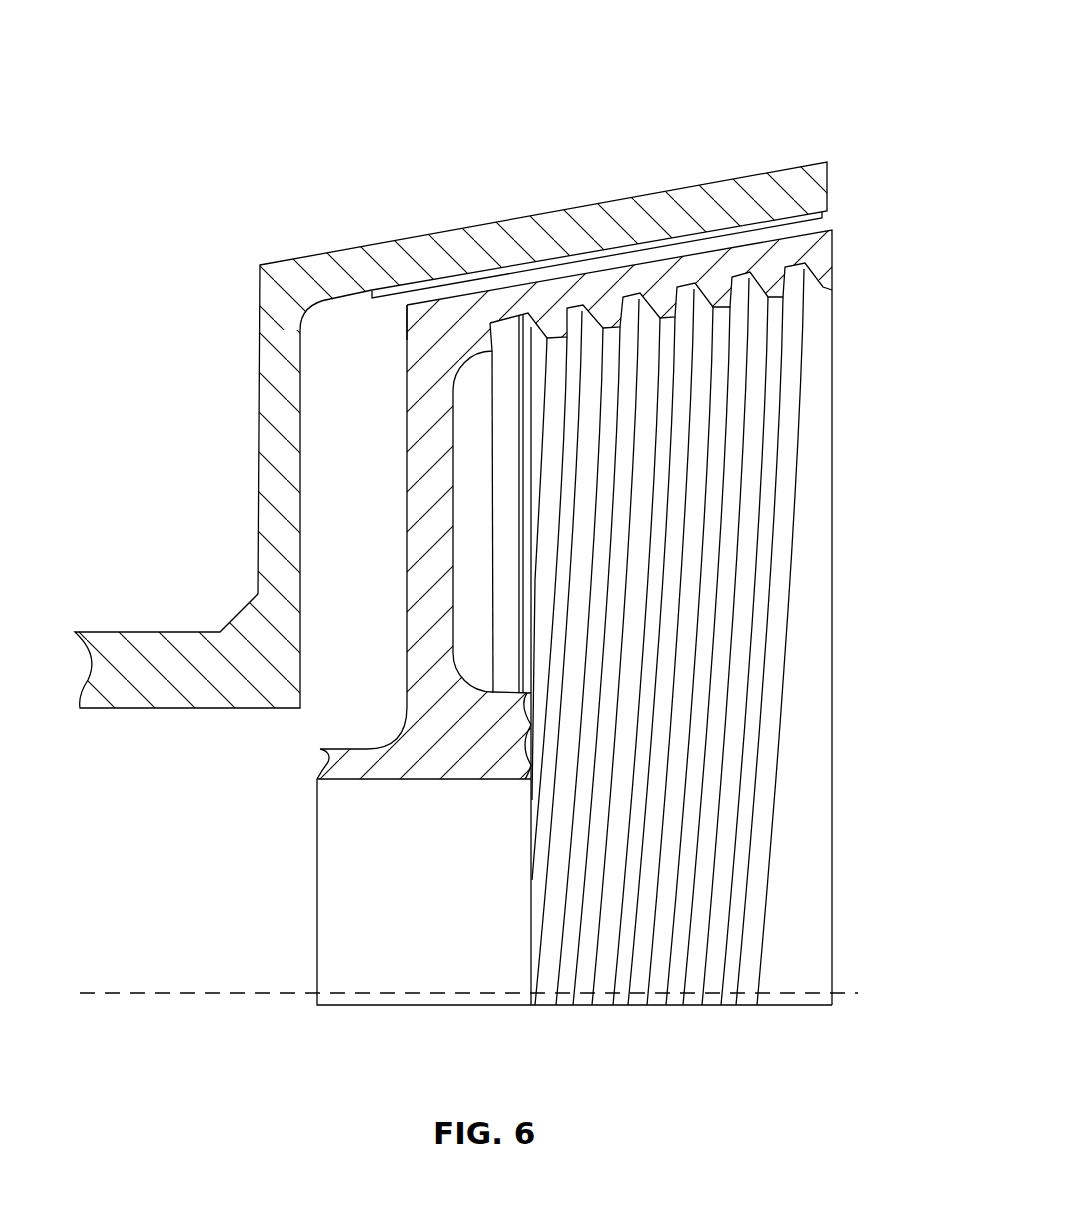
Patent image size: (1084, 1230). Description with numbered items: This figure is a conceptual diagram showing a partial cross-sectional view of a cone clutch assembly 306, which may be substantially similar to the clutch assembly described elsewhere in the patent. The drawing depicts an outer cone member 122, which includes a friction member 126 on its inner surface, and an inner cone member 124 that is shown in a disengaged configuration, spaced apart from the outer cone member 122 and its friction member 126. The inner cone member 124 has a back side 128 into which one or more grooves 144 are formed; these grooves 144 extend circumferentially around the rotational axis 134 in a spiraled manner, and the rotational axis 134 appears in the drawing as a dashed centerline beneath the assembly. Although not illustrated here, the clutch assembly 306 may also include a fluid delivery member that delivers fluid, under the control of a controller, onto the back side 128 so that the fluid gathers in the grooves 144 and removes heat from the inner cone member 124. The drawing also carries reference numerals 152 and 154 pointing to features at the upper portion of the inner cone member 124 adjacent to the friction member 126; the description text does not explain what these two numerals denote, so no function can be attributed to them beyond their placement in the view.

The clutch assembly 306 is at (750, 62).
The outer cone member 122 is at (330, 267).
The inner cone member 124 is at (414, 500).
The friction member 126 is at (748, 228).
The back side 128 is at (752, 354).
The rotational axis 134 is at (495, 996).
The grooves 144 is at (587, 330).
The seal ring 152 is at (833, 238).
The corner / edge of seal ring 154 is at (407, 308).